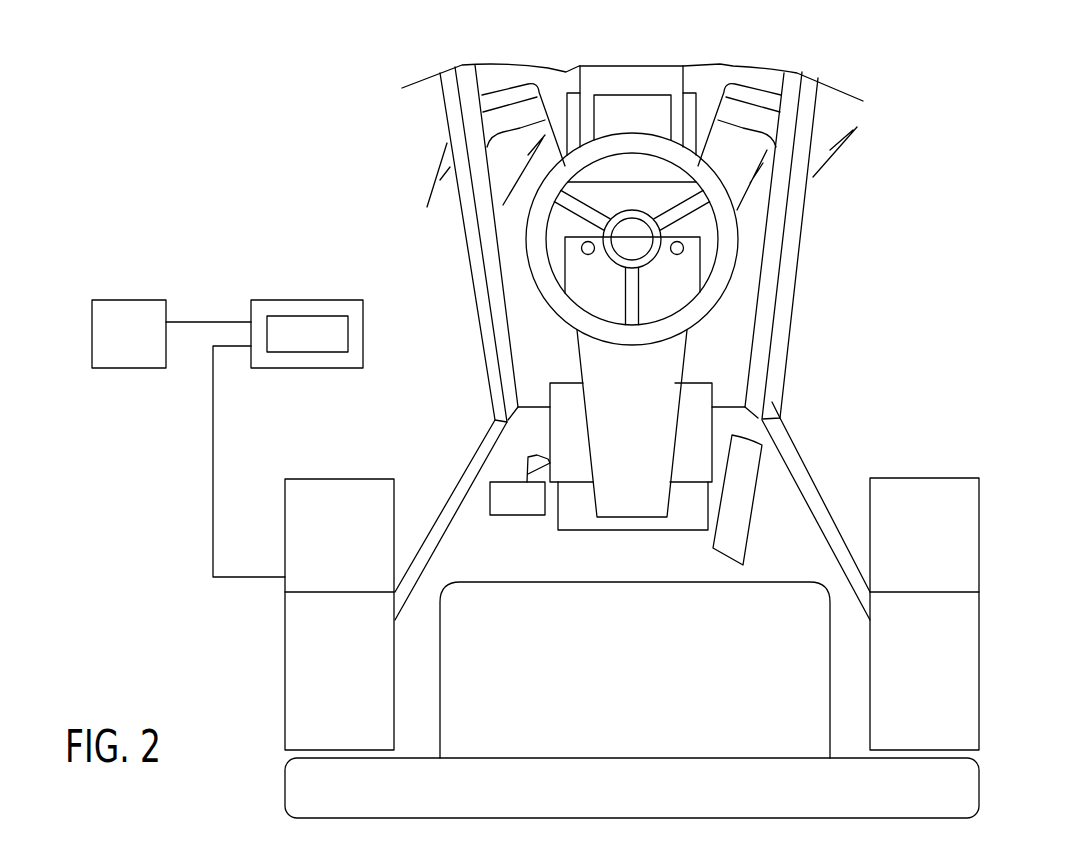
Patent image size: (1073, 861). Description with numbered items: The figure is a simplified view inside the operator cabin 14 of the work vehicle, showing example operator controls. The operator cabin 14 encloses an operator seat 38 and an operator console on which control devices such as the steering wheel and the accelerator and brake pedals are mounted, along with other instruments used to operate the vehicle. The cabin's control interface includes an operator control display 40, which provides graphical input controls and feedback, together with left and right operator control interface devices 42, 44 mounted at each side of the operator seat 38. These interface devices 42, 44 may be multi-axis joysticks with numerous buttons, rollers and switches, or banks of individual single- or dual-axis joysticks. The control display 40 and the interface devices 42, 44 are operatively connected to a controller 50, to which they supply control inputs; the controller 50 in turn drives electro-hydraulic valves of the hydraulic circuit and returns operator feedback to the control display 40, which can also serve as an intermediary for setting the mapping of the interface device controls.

The operator cabin 14 is at (826, 275).
The operator seat 38 is at (618, 777).
The operator control display 40 is at (307, 315).
The left operator control interface device 42 is at (340, 479).
The right operator control interface device 44 is at (950, 537).
The controller 50 is at (137, 318).